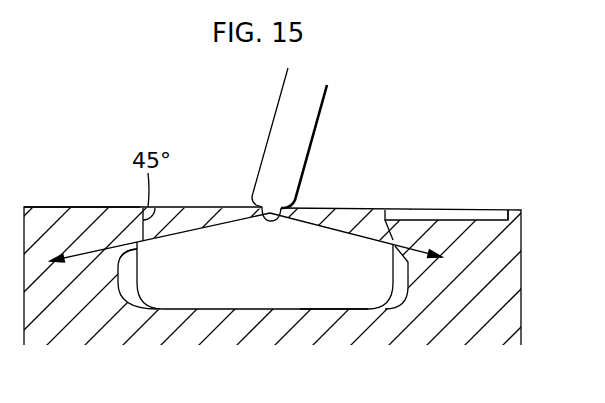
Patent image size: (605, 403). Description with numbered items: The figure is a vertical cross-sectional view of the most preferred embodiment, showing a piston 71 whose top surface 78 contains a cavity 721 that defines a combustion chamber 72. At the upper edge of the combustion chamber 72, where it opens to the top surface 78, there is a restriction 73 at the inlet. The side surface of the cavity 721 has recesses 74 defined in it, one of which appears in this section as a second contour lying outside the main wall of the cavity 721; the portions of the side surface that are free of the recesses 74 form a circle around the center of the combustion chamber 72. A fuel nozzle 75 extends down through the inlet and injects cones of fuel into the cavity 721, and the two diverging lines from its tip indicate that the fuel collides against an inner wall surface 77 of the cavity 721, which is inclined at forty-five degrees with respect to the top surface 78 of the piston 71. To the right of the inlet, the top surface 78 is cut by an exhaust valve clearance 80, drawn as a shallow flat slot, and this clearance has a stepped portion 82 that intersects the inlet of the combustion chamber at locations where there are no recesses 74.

The piston 71 is at (522, 258).
The combustion chamber 72 is at (287, 276).
The cavity 721 is at (342, 310).
The restriction 73 is at (392, 230).
The recess 74 is at (400, 282).
The fuel nozzle 75 is at (288, 103).
The inner wall surface 77 is at (130, 252).
The top surface 78 is at (80, 207).
The exhaust valve clearance 80 is at (445, 213).
The stepped portion 82 is at (506, 212).